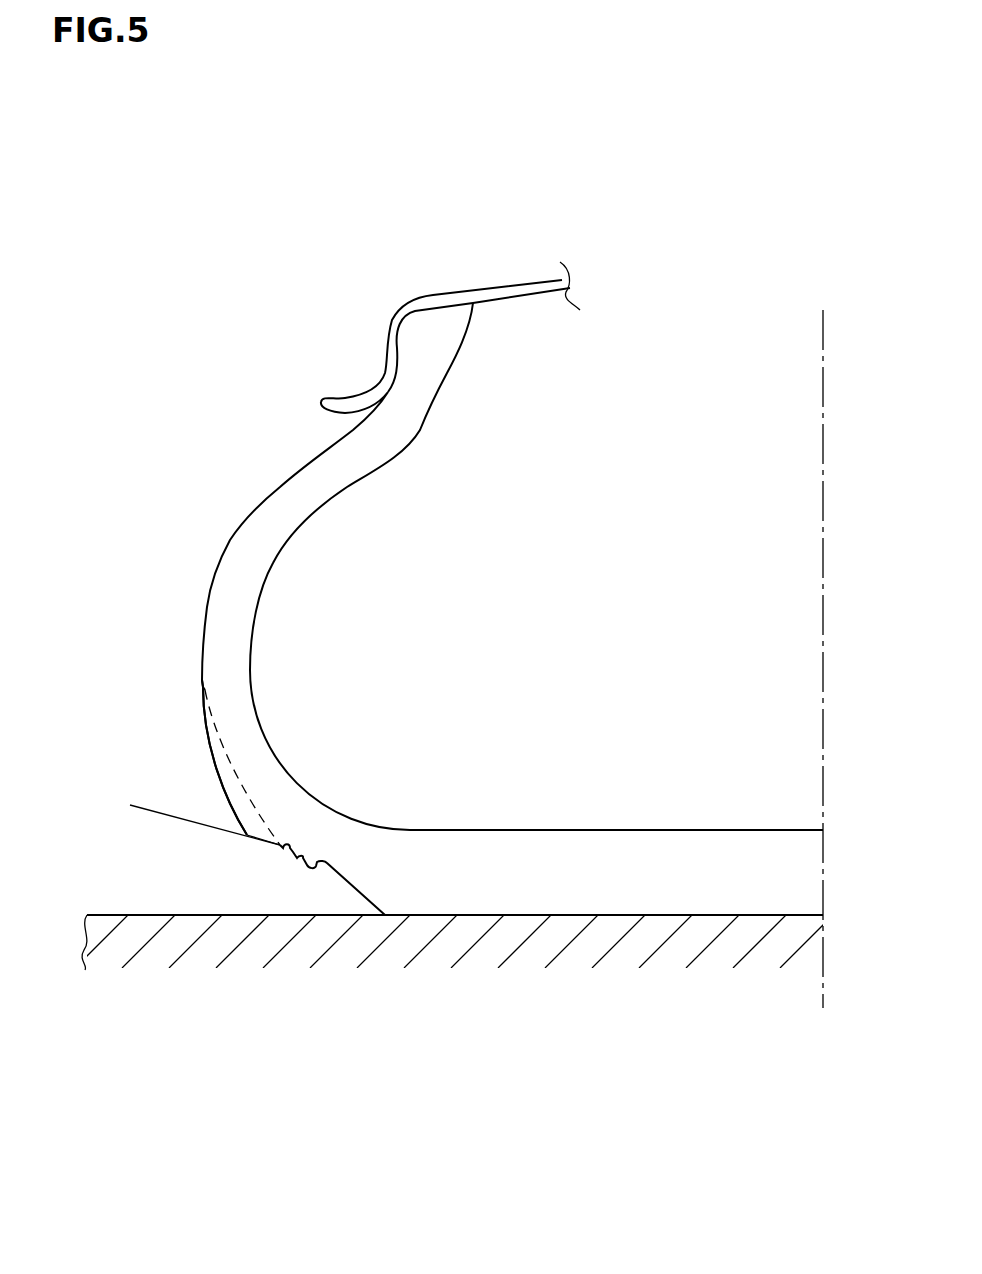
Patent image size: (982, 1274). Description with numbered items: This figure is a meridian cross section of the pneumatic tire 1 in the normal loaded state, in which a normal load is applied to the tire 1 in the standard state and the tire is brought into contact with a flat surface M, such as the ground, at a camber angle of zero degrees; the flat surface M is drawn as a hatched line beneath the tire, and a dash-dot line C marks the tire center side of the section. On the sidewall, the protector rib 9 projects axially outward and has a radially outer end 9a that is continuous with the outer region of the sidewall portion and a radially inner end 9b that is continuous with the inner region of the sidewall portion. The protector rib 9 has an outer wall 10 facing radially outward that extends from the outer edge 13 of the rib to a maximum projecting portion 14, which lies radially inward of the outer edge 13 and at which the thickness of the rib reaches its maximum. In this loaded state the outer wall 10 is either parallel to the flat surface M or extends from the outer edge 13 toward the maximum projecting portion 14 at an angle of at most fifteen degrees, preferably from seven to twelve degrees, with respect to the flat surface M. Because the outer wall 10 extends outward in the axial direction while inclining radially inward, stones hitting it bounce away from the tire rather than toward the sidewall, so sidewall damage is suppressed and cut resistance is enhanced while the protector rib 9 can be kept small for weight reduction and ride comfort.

The pneumatic tire 1 is at (228, 482).
The protector rib 9 is at (217, 765).
The radially outer end 9a is at (242, 767).
The radially inner end 9b is at (200, 685).
The outer wall 10 is at (257, 838).
The outer edge 13 is at (280, 845).
The maximum projecting portion 14 is at (247, 835).
The flat surface M is at (658, 915).
The tire equator / center line C is at (823, 645).